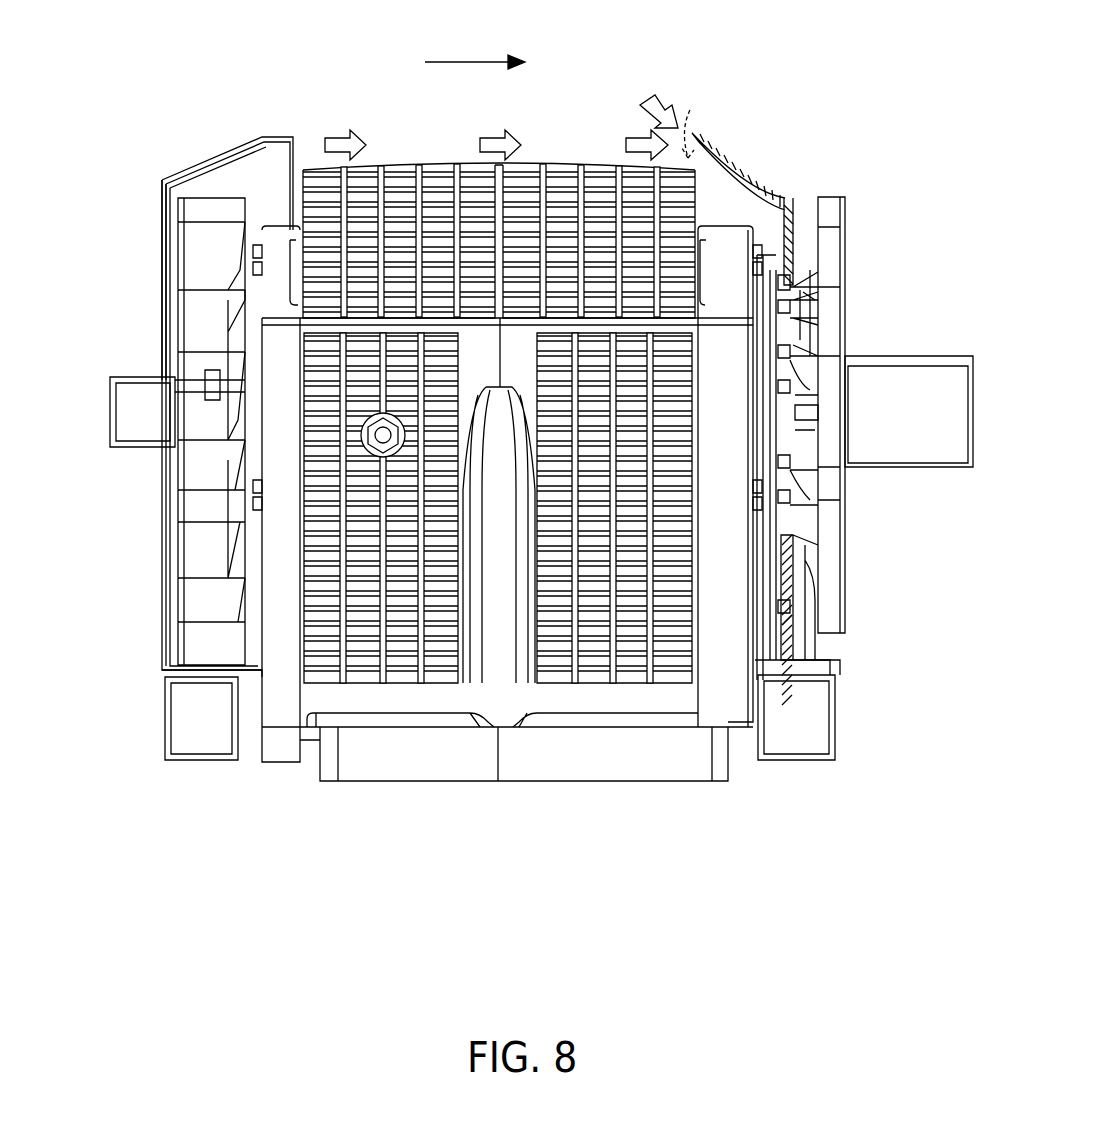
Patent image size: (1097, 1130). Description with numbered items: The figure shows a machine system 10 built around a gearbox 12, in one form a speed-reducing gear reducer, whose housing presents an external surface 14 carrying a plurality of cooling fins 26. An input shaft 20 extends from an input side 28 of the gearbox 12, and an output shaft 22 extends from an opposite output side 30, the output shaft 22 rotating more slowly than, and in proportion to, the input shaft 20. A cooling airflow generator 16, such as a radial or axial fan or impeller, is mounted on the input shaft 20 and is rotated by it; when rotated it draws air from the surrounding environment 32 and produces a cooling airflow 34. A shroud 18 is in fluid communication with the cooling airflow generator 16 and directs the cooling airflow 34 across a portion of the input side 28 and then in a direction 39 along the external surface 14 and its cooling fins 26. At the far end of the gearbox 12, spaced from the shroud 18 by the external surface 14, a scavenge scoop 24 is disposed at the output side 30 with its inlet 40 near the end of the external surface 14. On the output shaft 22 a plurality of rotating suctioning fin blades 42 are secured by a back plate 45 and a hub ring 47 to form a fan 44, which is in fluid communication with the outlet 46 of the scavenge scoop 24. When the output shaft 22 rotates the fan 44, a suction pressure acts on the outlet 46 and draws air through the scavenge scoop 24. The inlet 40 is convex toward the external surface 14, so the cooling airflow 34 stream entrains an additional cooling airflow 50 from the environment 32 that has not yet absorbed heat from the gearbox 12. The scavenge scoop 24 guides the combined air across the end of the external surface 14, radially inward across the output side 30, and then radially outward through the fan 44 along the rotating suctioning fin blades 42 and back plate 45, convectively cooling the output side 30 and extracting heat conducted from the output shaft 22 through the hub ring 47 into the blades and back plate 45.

The machine system 10 is at (800, 36).
The gearbox 12 is at (272, 762).
The external surface 14 is at (493, 343).
The cooling airflow generator 16 is at (176, 552).
The shroud 18 is at (200, 167).
The input shaft 20 is at (120, 447).
The output shaft 22 is at (928, 467).
The scavenge scoop 24 is at (802, 168).
The cooling fins 26 is at (362, 687).
The input side 28 is at (96, 617).
The output side 30 is at (905, 613).
The environment 32 is at (602, 49).
The cooling airflow 34 is at (626, 133).
The direction 39 is at (476, 60).
The inlet 40 is at (690, 120).
The rotating suctioning fin blades 42 is at (828, 332).
The fan 44 is at (912, 270).
The back plate 45 is at (848, 554).
The outlet 46 is at (800, 297).
The hub ring 47 is at (830, 395).
The additional cooling airflow 50 is at (650, 95).